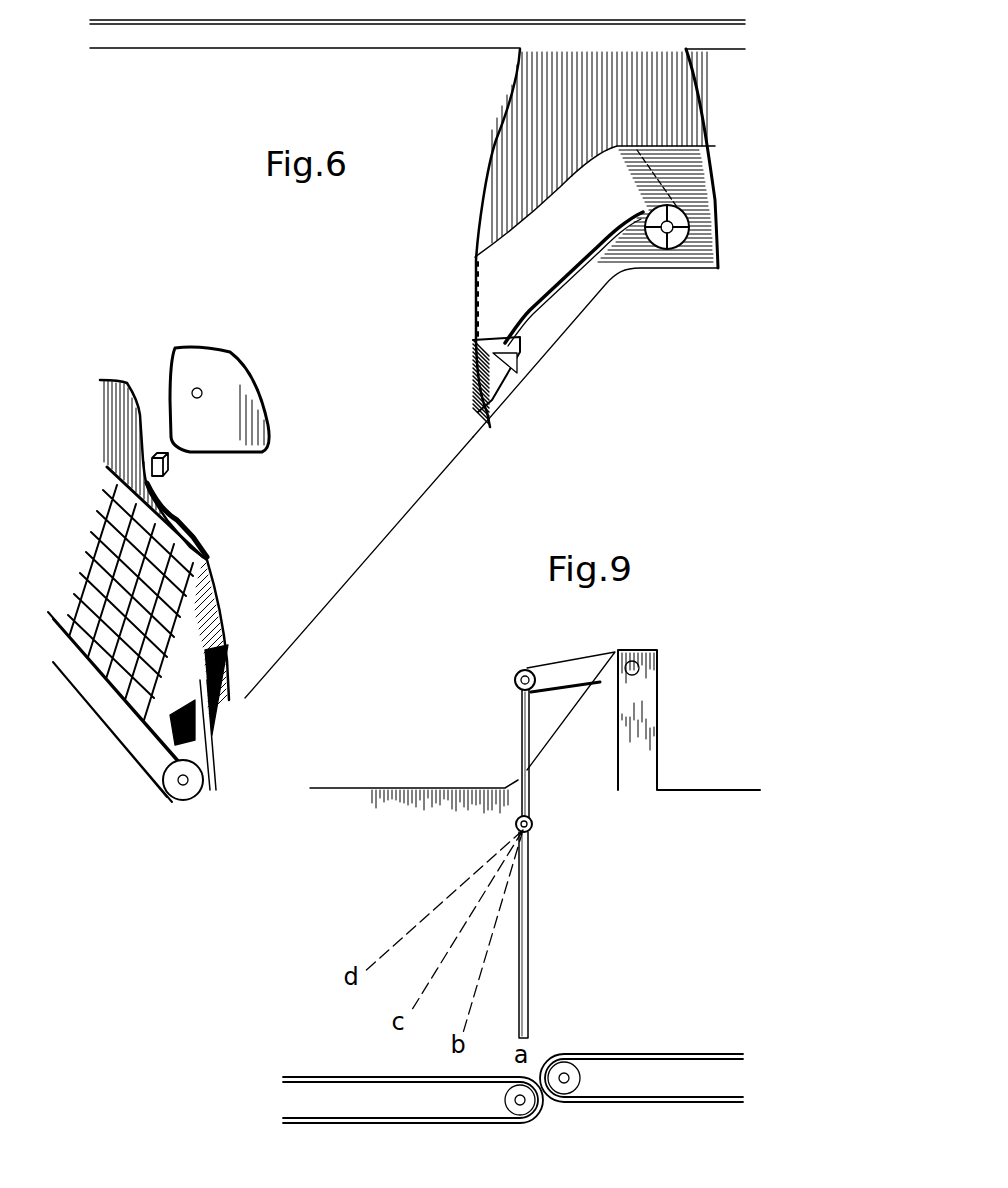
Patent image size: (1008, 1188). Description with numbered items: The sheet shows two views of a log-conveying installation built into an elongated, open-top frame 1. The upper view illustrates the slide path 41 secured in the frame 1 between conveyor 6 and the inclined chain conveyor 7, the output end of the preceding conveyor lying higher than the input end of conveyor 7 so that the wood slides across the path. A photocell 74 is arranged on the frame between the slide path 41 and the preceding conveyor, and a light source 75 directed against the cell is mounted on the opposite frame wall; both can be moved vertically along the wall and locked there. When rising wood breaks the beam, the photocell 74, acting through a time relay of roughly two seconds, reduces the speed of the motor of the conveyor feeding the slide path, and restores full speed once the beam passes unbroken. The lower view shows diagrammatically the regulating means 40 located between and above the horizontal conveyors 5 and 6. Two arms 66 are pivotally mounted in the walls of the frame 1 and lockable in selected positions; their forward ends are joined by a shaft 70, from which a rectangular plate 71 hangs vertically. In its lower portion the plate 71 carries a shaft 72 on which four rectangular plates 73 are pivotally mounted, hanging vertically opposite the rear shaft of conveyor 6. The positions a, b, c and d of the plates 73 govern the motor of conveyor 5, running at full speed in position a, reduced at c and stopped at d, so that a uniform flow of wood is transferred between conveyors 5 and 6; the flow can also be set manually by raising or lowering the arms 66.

In FIG. 6, the frame 1 is at (400, 495).
In FIG. 9, the frame 1 is at (641, 745).
In FIG. 9, the chain conveyor 5 is at (685, 1108).
In FIG. 6, the chain conveyor 6 is at (693, 248).
In FIG. 9, the chain conveyor 6 is at (540, 1127).
In FIG. 6, the chain conveyor 7 is at (197, 744).
In FIG. 9, the regulating means 40 is at (452, 742).
In FIG. 6, the slide path 41 is at (623, 210).
In FIG. 9, the arm 66 is at (580, 676).
In FIG. 9, the shaft 70 is at (518, 678).
In FIG. 9, the rectangular plate 71 is at (521, 722).
In FIG. 9, the shaft 72 is at (530, 822).
In FIG. 9, the rectangular plate 73 is at (528, 955).
In FIG. 6, the photocell 74 is at (168, 468).
In FIG. 6, the light source 75 is at (197, 388).